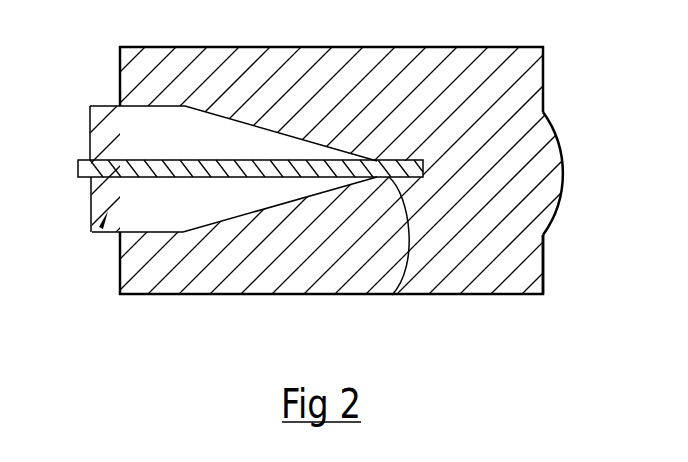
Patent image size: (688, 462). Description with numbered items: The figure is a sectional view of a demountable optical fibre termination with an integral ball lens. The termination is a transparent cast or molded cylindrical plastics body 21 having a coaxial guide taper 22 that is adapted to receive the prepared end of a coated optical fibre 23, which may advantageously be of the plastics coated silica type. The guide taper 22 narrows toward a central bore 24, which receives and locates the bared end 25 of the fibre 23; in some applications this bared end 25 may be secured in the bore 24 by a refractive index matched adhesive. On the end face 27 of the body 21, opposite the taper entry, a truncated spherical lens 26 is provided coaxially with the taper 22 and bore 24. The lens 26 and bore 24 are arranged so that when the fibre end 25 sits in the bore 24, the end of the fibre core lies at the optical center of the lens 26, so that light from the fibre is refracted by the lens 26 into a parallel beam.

The cylindrical plastics body 21 is at (473, 288).
The guide taper 22 is at (223, 117).
The coated optical fibre 23 is at (95, 232).
The central bore 24 is at (392, 295).
The bared end of the fibre 25 is at (78, 170).
The truncated spherical lens 26 is at (563, 175).
The end face 27 is at (544, 255).